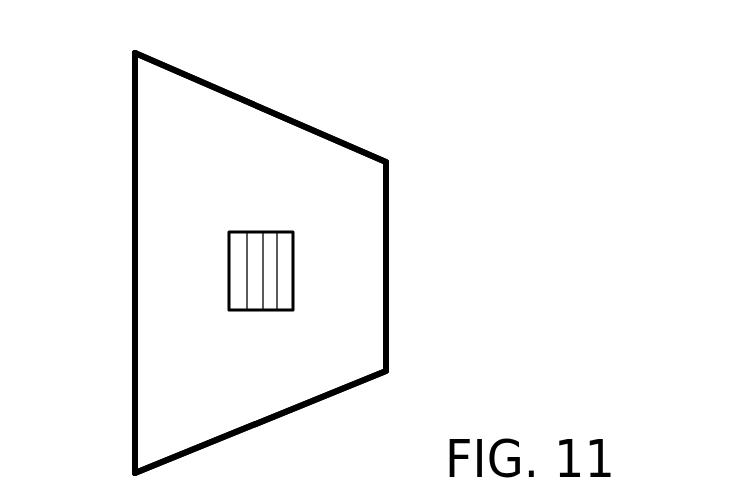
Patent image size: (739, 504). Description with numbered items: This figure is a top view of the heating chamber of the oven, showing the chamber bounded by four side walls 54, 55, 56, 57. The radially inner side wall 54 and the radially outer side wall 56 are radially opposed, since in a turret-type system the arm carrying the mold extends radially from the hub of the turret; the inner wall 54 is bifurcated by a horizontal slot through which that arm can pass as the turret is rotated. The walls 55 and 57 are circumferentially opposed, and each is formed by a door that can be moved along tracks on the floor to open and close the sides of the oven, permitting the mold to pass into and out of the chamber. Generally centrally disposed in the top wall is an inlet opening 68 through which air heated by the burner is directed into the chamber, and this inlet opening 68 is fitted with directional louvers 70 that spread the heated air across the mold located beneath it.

The radially inner side wall 54 is at (388, 262).
The side wall 55 is at (288, 118).
The radially outer side wall 56 is at (133, 280).
The side wall 57 is at (277, 420).
The inlet opening 68 is at (293, 238).
The directional louvers 70 is at (263, 280).